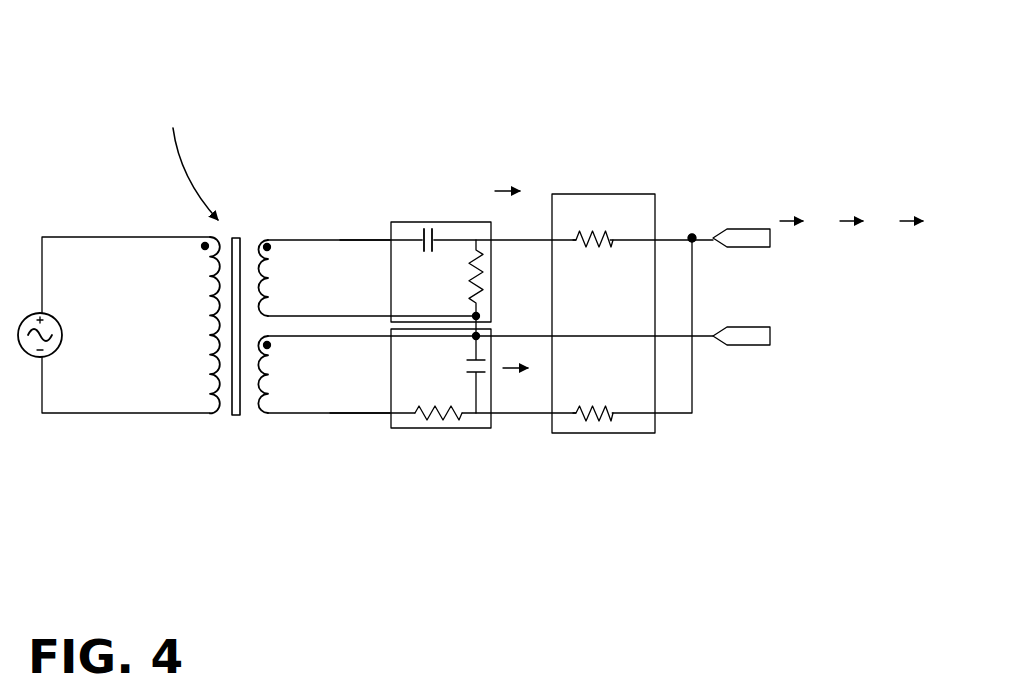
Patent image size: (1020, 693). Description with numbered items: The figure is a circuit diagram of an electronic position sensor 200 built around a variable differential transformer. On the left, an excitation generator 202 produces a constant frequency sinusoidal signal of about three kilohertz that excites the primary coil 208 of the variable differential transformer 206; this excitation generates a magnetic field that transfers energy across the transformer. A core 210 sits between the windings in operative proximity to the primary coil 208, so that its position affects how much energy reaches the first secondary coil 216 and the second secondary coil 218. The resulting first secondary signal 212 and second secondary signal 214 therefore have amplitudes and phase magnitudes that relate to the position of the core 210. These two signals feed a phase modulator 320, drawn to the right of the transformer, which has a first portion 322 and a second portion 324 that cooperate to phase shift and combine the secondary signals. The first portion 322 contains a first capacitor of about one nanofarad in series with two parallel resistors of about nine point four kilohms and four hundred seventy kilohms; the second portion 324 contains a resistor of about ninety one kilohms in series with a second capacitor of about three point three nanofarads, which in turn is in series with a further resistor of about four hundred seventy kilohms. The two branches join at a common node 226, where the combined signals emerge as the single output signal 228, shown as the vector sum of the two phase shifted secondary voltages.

The electronic sensor 200 is at (98, 147).
The excitation generator 202 is at (39, 360).
The VDT 206 is at (235, 172).
The primary coil 208 is at (212, 416).
The VDT core 210 is at (236, 416).
The first secondary signal 212 is at (375, 238).
The second secondary signal 214 is at (357, 416).
The first secondary coil 216 is at (259, 239).
The second secondary coil 218 is at (262, 417).
The output node 226 is at (693, 236).
The output signal 228 is at (817, 227).
The phase modulator 320 is at (688, 95).
The first portion 322 is at (602, 193).
The second portion 324 is at (593, 418).